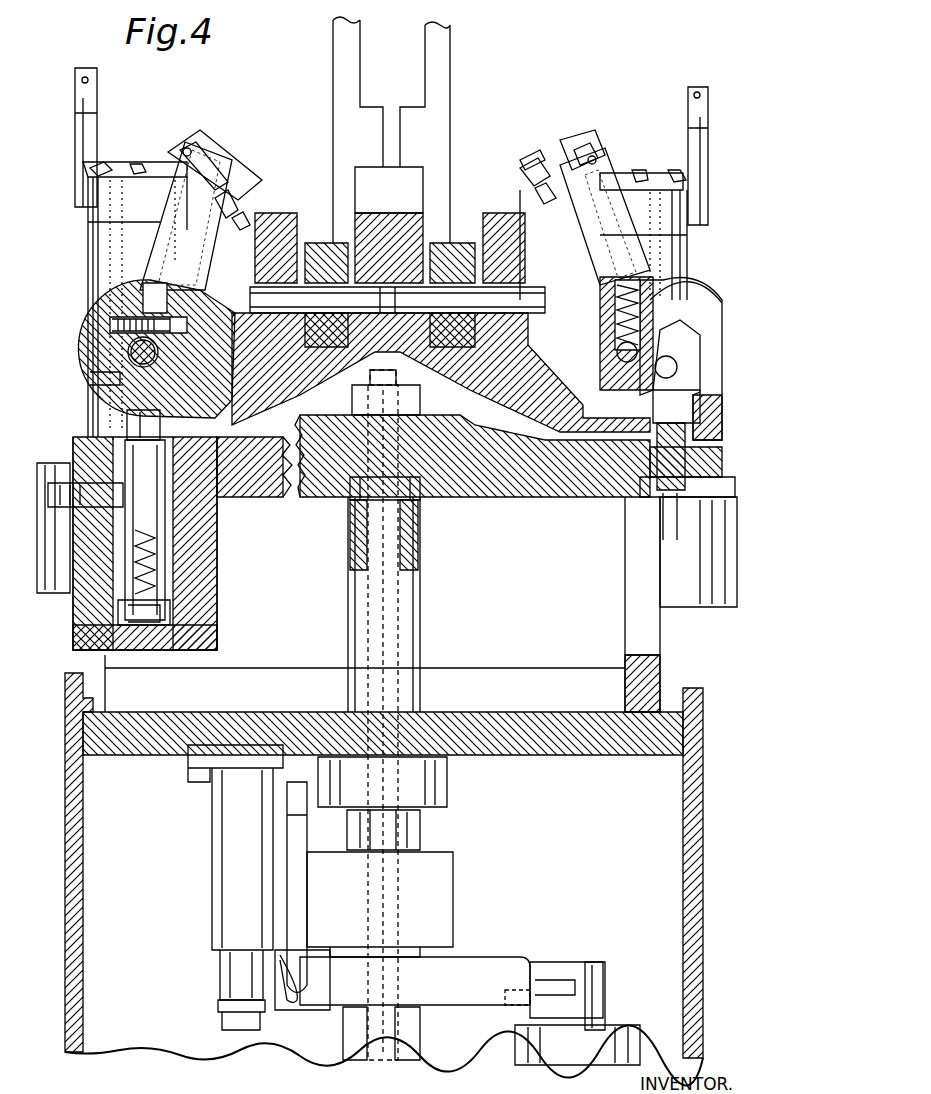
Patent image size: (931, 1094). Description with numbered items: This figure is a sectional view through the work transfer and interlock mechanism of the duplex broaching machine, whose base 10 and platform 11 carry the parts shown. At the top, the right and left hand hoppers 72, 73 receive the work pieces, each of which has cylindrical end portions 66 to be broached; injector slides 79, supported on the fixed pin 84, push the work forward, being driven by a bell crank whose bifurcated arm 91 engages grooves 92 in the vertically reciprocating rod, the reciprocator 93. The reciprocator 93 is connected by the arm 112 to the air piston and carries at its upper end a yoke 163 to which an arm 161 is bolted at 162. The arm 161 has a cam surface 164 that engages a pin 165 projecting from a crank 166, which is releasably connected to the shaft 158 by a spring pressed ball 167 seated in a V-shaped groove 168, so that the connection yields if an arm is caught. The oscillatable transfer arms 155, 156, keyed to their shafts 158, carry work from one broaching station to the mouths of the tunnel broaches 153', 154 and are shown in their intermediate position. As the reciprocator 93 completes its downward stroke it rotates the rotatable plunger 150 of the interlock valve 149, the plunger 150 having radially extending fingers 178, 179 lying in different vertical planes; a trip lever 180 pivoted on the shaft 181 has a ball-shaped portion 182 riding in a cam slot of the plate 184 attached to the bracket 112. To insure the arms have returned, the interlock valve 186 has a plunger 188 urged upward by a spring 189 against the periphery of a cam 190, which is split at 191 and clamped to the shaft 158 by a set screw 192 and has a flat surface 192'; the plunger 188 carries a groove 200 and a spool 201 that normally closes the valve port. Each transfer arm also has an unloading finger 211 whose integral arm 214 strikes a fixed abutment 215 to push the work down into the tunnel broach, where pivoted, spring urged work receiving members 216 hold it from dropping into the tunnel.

The base 10 is at (703, 843).
The platform 11 is at (595, 757).
The cylindrical portion of the work piece 66 is at (240, 230).
The right hand hopper 72 is at (450, 58).
The left hand hopper 73 is at (333, 52).
The injector slide 79 is at (318, 243).
The pin 84 is at (255, 292).
The bifurcated arm 91 is at (420, 551).
The groove 92 is at (398, 530).
The reciprocator 93 is at (420, 607).
The arm 112 is at (430, 855).
The interlock valve 149 is at (525, 1046).
The rotatable plunger 150 is at (603, 962).
The tunnel broach 153' is at (640, 245).
The tunnel broach 154 is at (88, 244).
The transfer arm 155 is at (590, 262).
The transfer arm 156 is at (180, 257).
The shaft 158 is at (130, 352).
The arm 161 is at (710, 353).
The bolt 162 is at (685, 468).
The yoke 163 is at (545, 495).
The cam surface 164 is at (690, 298).
The pin 165 is at (658, 392).
The crank 166 is at (600, 341).
The spring pressed ball 167 is at (620, 345).
The V-shaped groove 168 is at (655, 370).
The radially extending finger 178 is at (545, 1010).
The radially extending finger 179 is at (568, 968).
The trip lever 180 is at (490, 968).
The shaft 181 is at (220, 975).
The ball-shaped portion 182 is at (287, 1010).
The plate 184 is at (295, 827).
The interlock valve 186 is at (200, 580).
The plunger 188 is at (128, 420).
The spring 189 is at (150, 556).
The cam 190 is at (78, 372).
The split 191 is at (110, 283).
The set screw 192 is at (111, 311).
The flat surface 192' is at (76, 387).
The groove 200 is at (160, 515).
The spool 201 is at (150, 596).
The unloading finger 211 is at (525, 165).
The arm 214 is at (586, 142).
The fixed abutment 215 is at (75, 108).
The work receiving member 216 is at (98, 168).